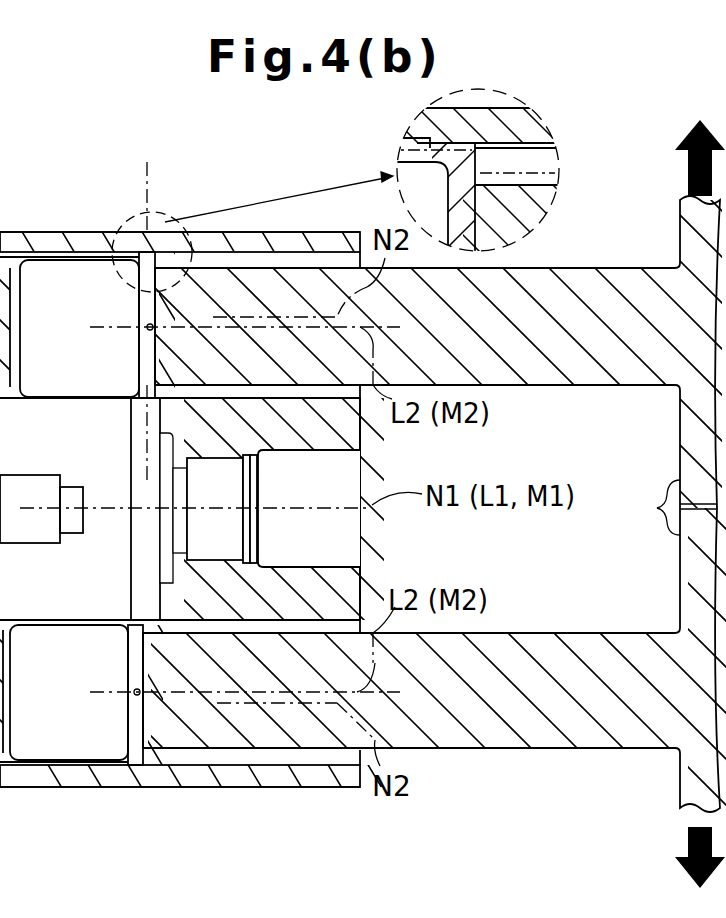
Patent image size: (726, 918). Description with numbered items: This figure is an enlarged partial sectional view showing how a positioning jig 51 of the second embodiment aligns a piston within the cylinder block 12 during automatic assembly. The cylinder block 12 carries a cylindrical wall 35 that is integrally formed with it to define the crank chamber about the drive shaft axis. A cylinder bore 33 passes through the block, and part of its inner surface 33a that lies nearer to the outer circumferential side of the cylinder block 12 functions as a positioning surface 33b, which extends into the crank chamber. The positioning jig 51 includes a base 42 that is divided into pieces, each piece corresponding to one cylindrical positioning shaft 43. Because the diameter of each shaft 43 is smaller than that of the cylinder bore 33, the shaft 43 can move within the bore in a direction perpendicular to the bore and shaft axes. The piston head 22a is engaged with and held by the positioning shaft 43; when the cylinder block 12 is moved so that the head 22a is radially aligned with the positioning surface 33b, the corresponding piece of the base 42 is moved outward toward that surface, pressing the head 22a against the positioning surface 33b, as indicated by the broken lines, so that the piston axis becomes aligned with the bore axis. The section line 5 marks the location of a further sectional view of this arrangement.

The section line for FIG. 5 is at (147, 157).
The cylinder block 12 is at (410, 106).
The piston head 22a is at (156, 258).
The cylinder bore 33 is at (325, 254).
The inner surface 33a is at (236, 252).
The positioning surface 33b is at (113, 232).
The cylindrical wall 35 is at (55, 782).
The base 42 is at (668, 507).
The positioning shaft 43 is at (587, 368).
The positioning jig 51 is at (678, 232).